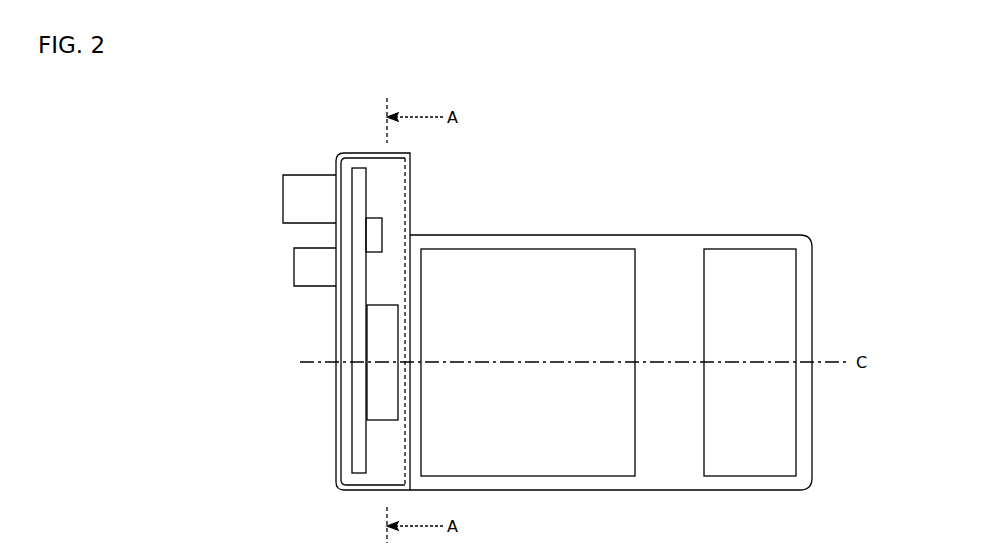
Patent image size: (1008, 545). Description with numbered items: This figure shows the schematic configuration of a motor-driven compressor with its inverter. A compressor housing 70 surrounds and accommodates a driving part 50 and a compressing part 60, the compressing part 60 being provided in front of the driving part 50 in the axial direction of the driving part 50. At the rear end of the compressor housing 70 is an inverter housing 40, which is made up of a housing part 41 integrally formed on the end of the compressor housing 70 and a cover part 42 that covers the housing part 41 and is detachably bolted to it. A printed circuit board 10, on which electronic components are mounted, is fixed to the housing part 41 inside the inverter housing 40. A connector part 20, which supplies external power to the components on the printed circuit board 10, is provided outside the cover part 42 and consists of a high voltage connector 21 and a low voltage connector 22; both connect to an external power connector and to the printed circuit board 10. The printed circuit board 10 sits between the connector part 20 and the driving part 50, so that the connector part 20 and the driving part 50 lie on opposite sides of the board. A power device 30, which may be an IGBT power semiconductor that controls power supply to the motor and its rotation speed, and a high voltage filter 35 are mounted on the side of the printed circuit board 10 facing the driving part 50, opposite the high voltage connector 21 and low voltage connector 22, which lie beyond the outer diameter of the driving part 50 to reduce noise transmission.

The printed circuit board 10 is at (361, 455).
The connector part 20 is at (260, 230).
The high voltage connector 21 is at (296, 201).
The low voltage connector 22 is at (300, 267).
The power device 30 is at (380, 344).
The high voltage filter 35 is at (375, 250).
The inverter housing 40 is at (437, 311).
The housing part 41 is at (410, 186).
The cover part 42 is at (381, 145).
The driving part 50 is at (587, 268).
The compressing part 60 is at (742, 262).
The compressor housing 70 is at (654, 235).